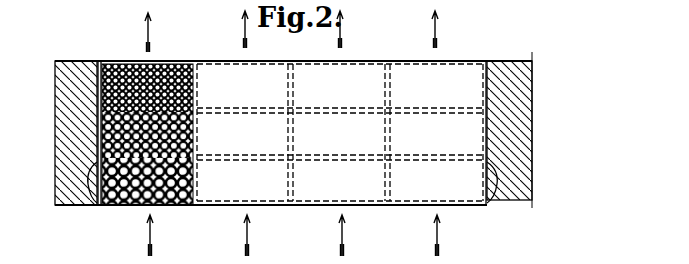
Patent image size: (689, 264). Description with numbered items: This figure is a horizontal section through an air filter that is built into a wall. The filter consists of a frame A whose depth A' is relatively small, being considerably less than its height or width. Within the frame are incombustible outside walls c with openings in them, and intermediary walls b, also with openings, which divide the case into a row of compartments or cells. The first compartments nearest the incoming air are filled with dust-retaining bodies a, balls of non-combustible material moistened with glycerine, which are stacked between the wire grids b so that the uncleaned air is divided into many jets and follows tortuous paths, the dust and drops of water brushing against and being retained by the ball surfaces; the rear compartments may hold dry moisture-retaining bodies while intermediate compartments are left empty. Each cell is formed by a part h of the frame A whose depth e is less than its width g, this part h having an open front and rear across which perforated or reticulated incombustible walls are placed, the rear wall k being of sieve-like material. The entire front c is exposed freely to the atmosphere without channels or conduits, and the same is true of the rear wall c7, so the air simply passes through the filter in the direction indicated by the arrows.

The dust-retaining bodies a is at (116, 63).
The intermediate walls b is at (437, 107).
The outside walls c is at (172, 207).
The rear wall c7 is at (362, 60).
The depth of cell part e is at (198, 160).
The width of cell g is at (378, 136).
The part of frame h is at (90, 200).
The rear wall of cell k is at (385, 160).
The frame A is at (520, 130).
The depth of frame A' is at (587, 129).